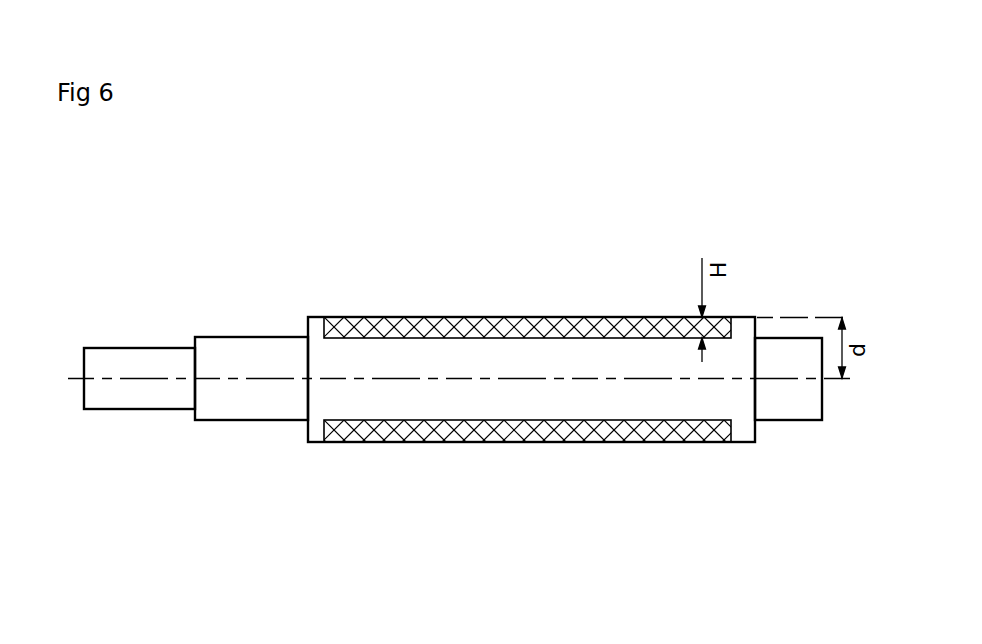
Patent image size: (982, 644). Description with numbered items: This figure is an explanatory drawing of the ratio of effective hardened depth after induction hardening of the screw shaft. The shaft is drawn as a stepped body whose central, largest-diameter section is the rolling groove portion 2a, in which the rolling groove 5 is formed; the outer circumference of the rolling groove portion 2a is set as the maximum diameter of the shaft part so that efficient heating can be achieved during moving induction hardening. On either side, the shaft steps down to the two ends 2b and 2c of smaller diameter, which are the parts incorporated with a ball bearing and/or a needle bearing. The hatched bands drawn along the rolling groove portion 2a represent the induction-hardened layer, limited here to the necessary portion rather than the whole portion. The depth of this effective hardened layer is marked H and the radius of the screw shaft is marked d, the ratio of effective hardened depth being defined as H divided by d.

The rolling groove portion 2a is at (630, 317).
The end of smaller diameter 2b is at (129, 347).
The end of smaller diameter 2c is at (787, 338).
The rolling groove 5 is at (443, 317).